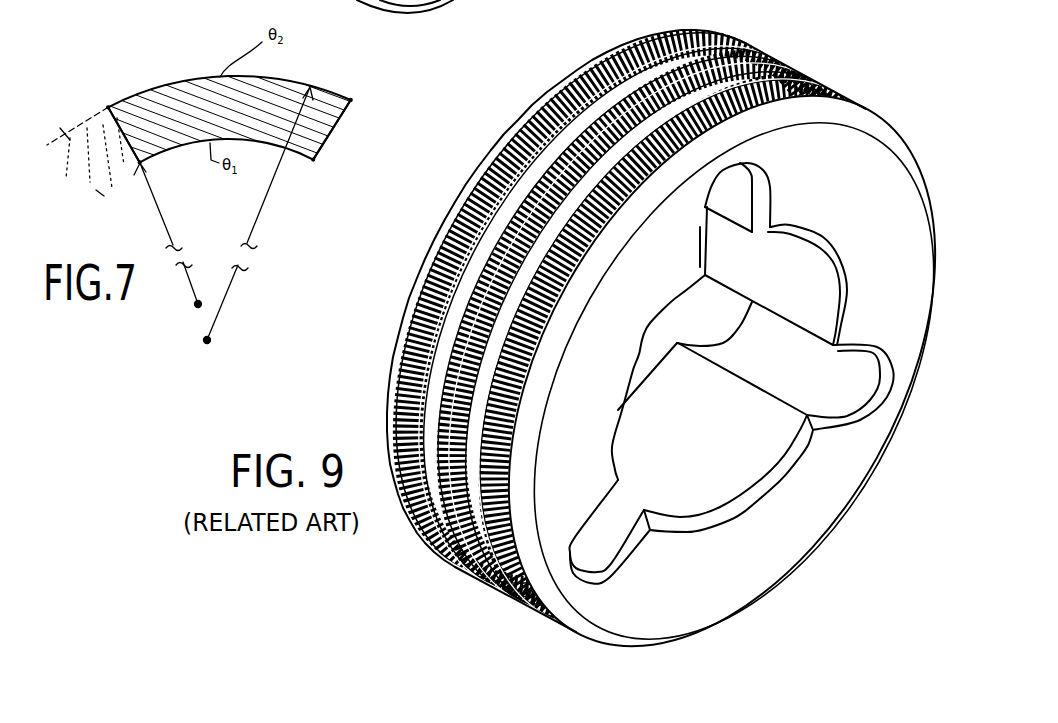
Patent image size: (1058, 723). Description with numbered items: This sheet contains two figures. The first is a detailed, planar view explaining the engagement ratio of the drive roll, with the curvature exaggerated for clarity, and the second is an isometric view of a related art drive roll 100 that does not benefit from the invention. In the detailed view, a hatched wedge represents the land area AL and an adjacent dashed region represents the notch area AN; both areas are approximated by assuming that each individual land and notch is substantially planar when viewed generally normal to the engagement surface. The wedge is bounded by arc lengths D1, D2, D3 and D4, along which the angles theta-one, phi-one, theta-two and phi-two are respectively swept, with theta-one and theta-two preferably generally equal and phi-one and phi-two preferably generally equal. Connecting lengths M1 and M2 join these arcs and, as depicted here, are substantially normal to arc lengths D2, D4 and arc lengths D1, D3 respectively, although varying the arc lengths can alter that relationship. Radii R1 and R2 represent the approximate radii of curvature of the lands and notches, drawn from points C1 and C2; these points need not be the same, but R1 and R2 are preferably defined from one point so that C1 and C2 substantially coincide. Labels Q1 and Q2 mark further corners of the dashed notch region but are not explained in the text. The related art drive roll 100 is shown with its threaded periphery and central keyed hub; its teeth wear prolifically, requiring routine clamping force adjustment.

In FIG. 9, the related art drive roll 100 is at (864, 530).
In FIG. 7, the land area AL is at (229, 119).
In FIG. 7, the notch area AN is at (85, 147).
In FIG. 7, the radius of curvature of the lands R1 is at (167, 222).
In FIG. 7, the radius of curvature of the notches R2 is at (266, 206).
In FIG. 7, the center point of land curvature C1 is at (187, 309).
In FIG. 7, the center point of notch curvature C2 is at (218, 348).
In FIG. 7, the connecting length M1 is at (110, 125).
In FIG. 7, the connecting length M2 is at (337, 127).
In FIG. 7, the arc length D1 is at (313, 160).
In FIG. 7, the arc length D2 is at (113, 183).
In FIG. 7, the arc length D3 is at (340, 88).
In FIG. 7, the arc length D4 is at (77, 125).
In FIG. 7, the first corner Q1 is at (100, 193).
In FIG. 7, the second corner Q2 is at (64, 132).